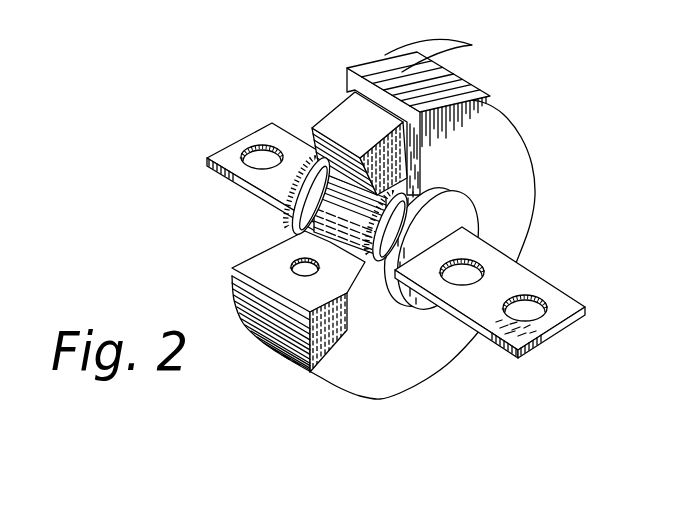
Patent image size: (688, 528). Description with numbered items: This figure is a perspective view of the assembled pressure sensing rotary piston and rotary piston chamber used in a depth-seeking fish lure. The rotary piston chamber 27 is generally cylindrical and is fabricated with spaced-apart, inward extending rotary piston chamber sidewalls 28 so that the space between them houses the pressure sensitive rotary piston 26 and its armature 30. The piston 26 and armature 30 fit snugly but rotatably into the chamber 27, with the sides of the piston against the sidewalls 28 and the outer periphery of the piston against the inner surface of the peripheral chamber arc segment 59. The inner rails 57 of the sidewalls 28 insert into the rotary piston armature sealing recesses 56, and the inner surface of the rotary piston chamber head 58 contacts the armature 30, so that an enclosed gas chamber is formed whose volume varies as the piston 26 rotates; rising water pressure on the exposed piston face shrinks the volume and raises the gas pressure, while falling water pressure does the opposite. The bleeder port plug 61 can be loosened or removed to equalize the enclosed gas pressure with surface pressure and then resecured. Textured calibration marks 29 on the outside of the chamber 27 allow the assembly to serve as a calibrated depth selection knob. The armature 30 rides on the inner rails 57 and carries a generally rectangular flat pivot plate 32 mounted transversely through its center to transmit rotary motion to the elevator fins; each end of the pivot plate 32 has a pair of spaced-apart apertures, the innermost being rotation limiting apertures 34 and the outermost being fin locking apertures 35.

The rotary piston 26 is at (331, 112).
The rotary piston chamber 27 is at (354, 68).
The rotary piston chamber sidewalls 28 is at (415, 168).
The textured calibration marks 29 is at (472, 45).
The armature 30 is at (452, 236).
The pivot plate 32 is at (243, 181).
The rotation limiting apertures 34 is at (453, 286).
The fin locking apertures 35 is at (255, 143).
The rotary piston armature sealing recesses 56 is at (370, 222).
The inner rails 57 is at (283, 234).
The rotary piston chamber head 58 is at (280, 272).
The peripheral chamber arc segment 59 is at (390, 97).
The bleeder port plug 61 is at (293, 266).